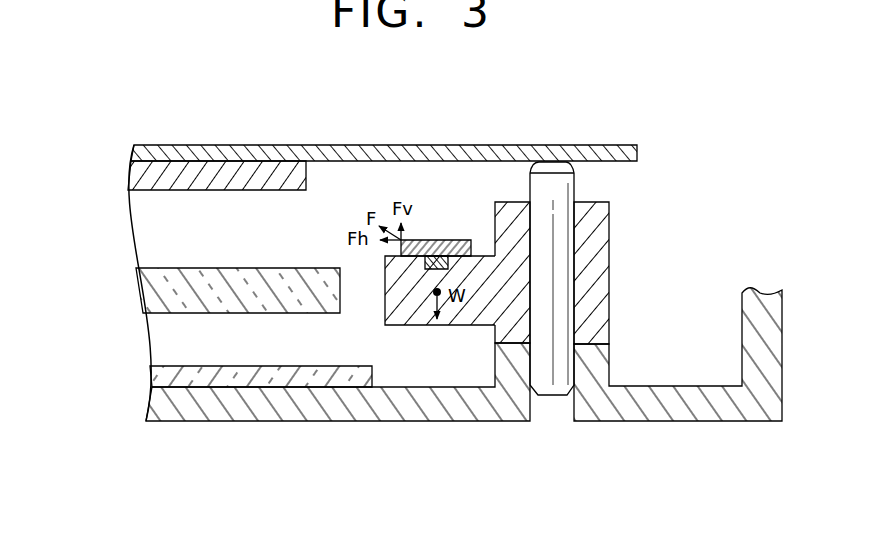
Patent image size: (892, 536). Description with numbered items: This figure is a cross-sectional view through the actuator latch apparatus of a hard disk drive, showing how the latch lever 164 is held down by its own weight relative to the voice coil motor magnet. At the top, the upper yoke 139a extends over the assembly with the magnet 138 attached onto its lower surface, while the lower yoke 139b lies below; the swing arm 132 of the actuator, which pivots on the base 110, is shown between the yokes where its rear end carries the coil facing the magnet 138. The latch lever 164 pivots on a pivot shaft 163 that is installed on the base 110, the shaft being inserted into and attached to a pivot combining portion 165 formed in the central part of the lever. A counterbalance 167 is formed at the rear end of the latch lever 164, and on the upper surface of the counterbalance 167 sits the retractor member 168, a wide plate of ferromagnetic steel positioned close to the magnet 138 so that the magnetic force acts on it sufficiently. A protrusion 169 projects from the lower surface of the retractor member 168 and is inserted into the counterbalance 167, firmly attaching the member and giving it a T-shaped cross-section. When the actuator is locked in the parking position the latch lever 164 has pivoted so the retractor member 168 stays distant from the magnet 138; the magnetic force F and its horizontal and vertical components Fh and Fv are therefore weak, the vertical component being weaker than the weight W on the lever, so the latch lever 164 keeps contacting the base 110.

The base 110 is at (163, 403).
The swing arm 132 is at (145, 292).
The magnet 138 is at (138, 177).
The upper yoke 139a is at (134, 148).
The lower yoke 139b is at (157, 375).
The pivot shaft 163 is at (549, 396).
The latch lever 164 is at (563, 299).
The pivot combining portion 165 is at (597, 299).
The counterbalance 167 is at (421, 318).
The retractor member 168 is at (436, 250).
The protrusion 169 is at (440, 262).